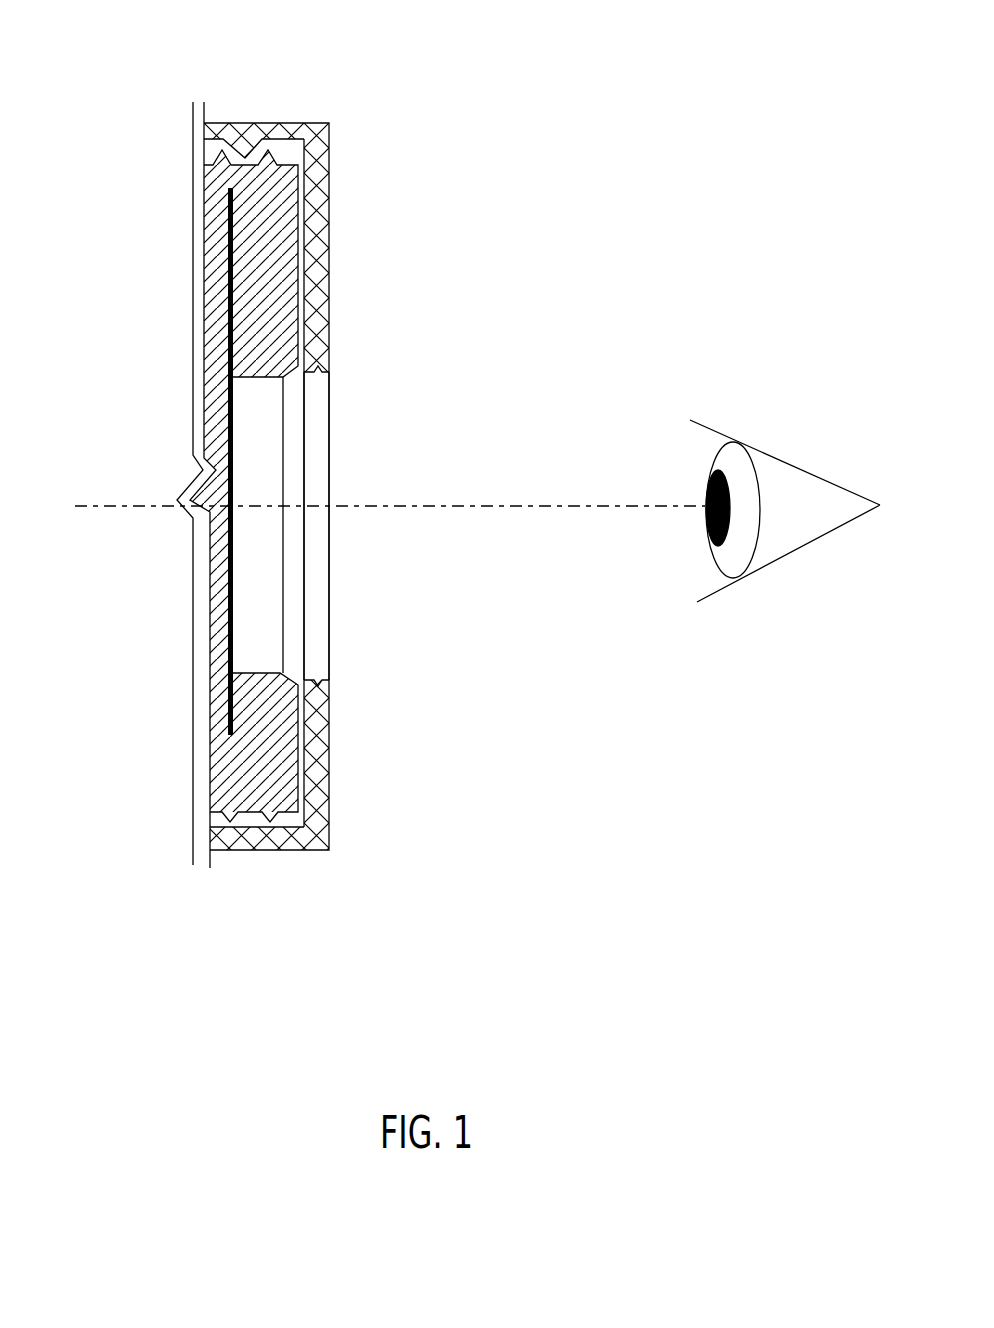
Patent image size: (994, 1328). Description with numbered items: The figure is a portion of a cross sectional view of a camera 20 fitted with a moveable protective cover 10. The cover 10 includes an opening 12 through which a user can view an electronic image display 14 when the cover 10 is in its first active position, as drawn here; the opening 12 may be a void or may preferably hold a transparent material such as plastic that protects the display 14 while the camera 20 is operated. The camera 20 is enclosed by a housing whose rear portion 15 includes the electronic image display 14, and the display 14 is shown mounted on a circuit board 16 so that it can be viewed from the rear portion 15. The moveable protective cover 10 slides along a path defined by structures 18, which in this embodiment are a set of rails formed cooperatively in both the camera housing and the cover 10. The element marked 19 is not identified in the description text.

The moveable protective cover 10 is at (315, 826).
The opening 12 is at (318, 388).
The electronic image display 14 is at (247, 656).
The rear portion 15 is at (302, 252).
The circuit board 16 is at (233, 538).
The structures 18 is at (242, 140).
The frame wall 19 is at (328, 192).
The camera 20 is at (392, 126).